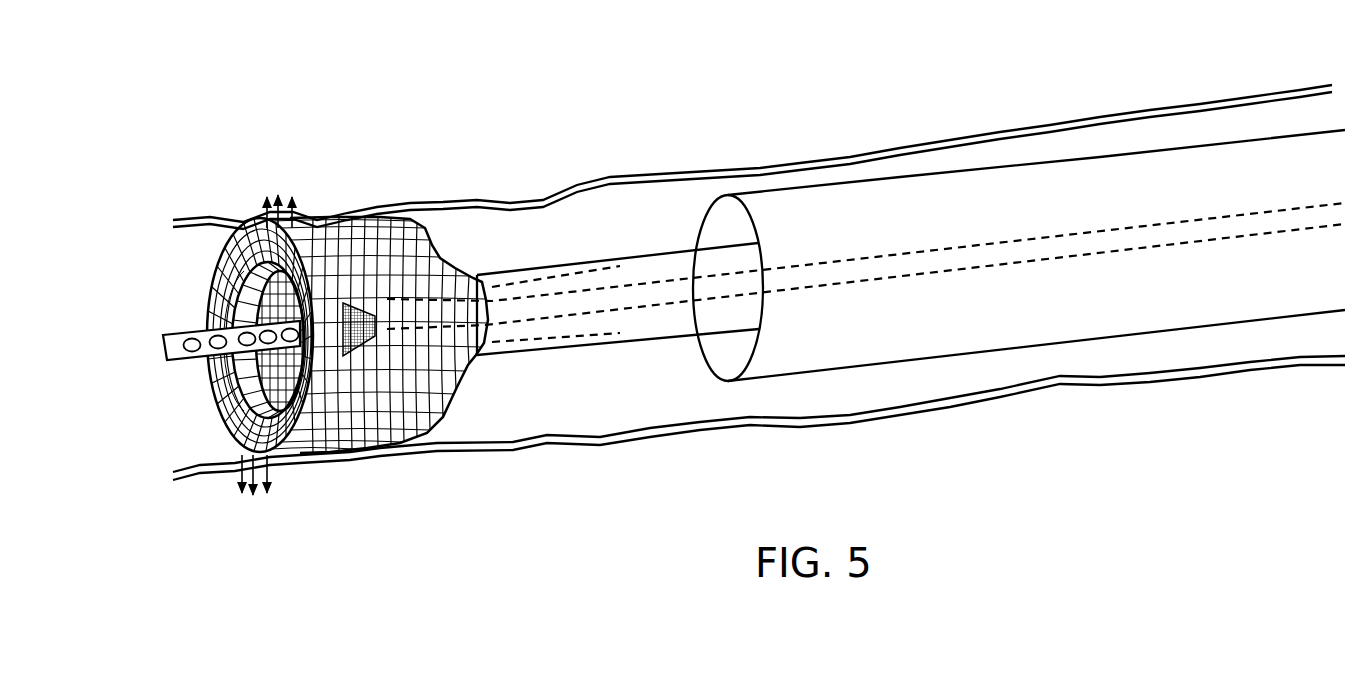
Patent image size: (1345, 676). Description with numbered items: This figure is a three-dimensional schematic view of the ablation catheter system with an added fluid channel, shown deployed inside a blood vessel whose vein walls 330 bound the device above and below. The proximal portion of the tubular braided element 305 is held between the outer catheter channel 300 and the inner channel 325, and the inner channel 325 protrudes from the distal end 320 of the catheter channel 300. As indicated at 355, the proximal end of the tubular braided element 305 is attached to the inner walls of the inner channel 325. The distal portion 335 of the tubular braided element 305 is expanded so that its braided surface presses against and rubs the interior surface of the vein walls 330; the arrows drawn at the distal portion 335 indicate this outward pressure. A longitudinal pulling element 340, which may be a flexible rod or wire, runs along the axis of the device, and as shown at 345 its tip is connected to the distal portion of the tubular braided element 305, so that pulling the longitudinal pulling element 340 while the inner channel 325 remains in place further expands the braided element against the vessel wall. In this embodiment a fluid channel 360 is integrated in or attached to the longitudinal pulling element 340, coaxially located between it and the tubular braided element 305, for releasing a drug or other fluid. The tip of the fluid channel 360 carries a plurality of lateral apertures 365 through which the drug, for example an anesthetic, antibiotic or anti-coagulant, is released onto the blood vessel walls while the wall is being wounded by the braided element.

The catheter channel 300 is at (964, 187).
The tubular braided element 305 is at (350, 235).
The distal end of the catheter channel 320 is at (470, 275).
The inner channel 325 is at (567, 262).
The vein walls 330 is at (468, 199).
The distal portion of the tubular braided element 335 is at (260, 213).
The longitudinal pulling element 340 is at (989, 267).
The connection of the pulling element tip to the braided element 345 is at (378, 338).
The attachment of the braided element to the inner channel walls 355 is at (620, 260).
The fluid channel 360 is at (162, 339).
The lateral apertures 365 is at (192, 333).